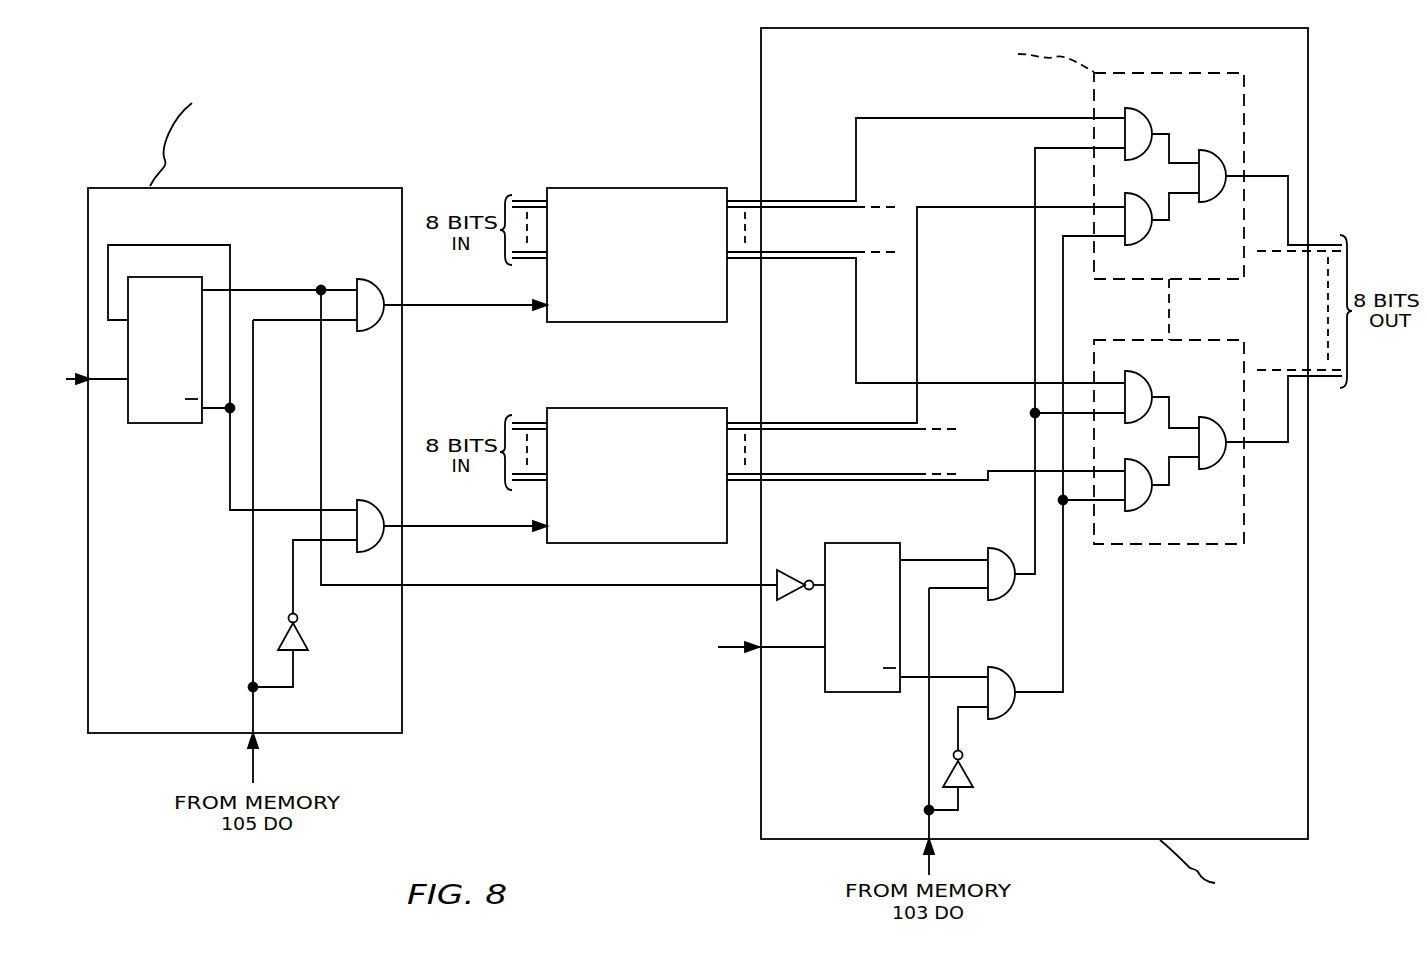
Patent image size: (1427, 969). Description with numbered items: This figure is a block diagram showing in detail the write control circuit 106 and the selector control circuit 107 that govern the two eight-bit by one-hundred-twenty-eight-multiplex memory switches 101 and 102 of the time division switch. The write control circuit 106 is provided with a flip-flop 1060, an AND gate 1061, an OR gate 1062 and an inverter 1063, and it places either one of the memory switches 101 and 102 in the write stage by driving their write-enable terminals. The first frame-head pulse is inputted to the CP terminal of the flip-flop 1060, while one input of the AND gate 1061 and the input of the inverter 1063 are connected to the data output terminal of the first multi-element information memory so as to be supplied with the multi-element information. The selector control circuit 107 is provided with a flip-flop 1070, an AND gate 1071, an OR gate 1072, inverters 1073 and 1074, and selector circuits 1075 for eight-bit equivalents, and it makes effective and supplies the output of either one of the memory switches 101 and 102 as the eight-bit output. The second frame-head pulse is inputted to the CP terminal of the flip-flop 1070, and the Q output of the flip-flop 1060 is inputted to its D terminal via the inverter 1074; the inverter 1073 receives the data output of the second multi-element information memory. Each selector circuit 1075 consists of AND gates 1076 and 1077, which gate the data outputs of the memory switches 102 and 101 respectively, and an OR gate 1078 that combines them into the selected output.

The memory switch 101 is at (650, 408).
The memory switch 102 is at (640, 188).
The write control circuit 106 is at (130, 735).
The selector control circuit 107 is at (760, 839).
The flip-flop 1060 is at (180, 425).
The AND gate 1061 is at (358, 280).
The OR gate 1062 is at (378, 480).
The inverter 1063 is at (310, 640).
The flip-flop 1070 is at (885, 693).
The AND gate 1071 is at (996, 550).
The OR gate 1072 is at (1012, 710).
The inverter 1073 is at (1000, 777).
The inverter 1074 is at (785, 568).
The selector circuit 1075 is at (1205, 73).
The AND gate 1076 is at (1143, 110).
The AND gate 1077 is at (1148, 238).
The OR gate 1078 is at (1225, 160).